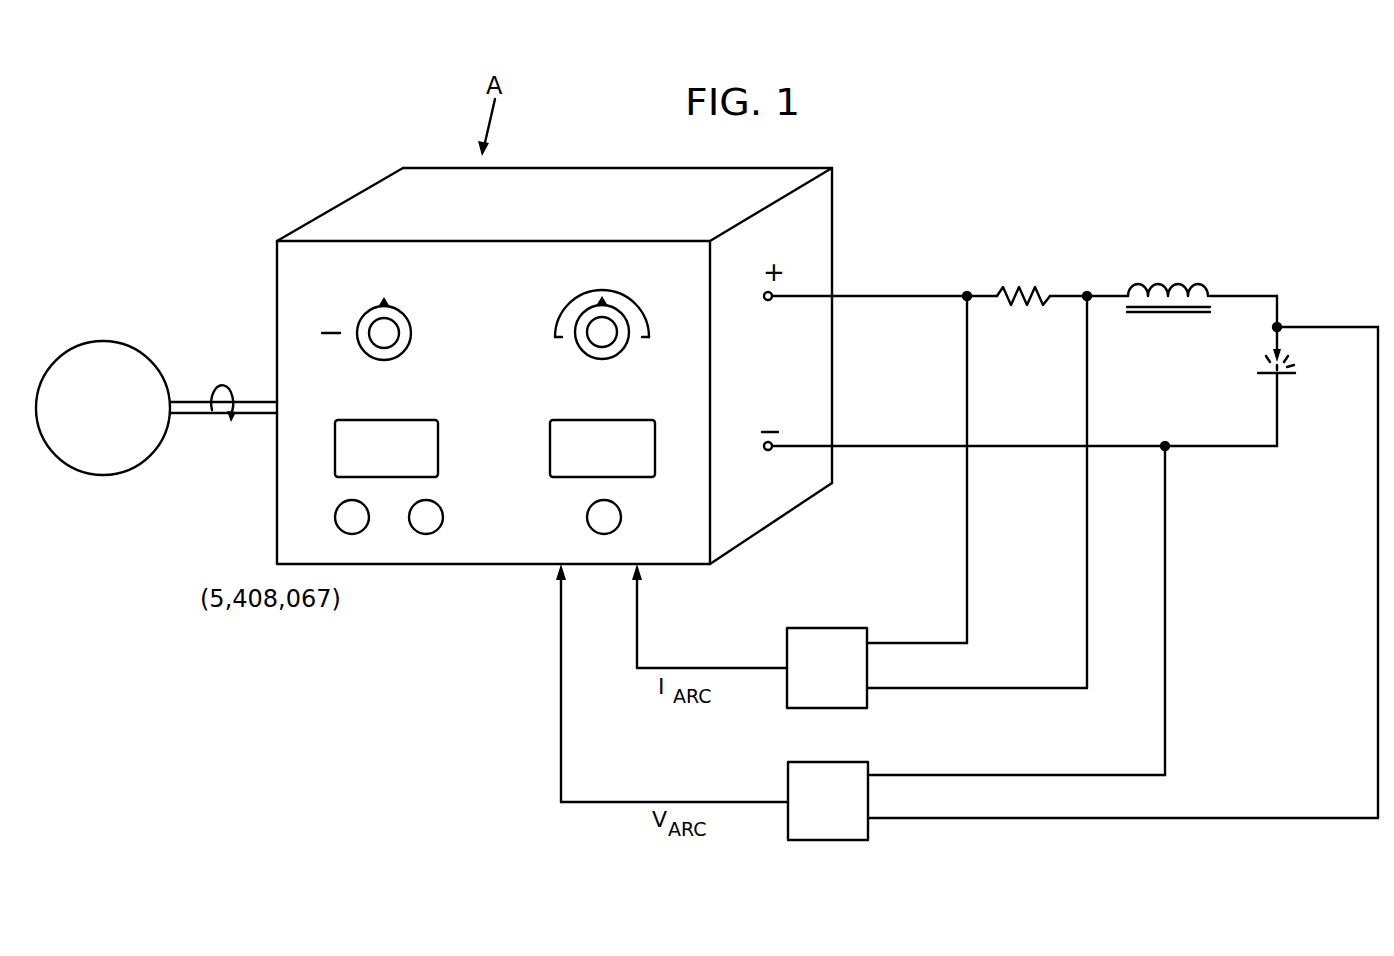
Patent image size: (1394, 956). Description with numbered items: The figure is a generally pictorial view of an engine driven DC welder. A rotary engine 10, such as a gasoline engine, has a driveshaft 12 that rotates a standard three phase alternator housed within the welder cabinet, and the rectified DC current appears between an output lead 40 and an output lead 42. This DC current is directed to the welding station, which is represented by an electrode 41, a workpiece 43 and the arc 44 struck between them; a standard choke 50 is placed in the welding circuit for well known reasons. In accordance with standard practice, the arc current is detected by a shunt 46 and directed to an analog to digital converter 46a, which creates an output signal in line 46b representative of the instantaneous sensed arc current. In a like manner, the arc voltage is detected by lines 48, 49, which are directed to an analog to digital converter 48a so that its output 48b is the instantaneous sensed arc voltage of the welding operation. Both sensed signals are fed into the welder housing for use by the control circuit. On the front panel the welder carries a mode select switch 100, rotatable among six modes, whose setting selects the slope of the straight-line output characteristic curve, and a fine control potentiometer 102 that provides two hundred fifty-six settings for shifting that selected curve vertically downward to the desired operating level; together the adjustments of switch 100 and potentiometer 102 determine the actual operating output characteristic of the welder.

The rotary engine 10 is at (120, 342).
The driveshaft 12 is at (198, 413).
The mode select switch 100 is at (400, 313).
The fine control potentiometer 102 is at (617, 308).
The output lead 40 is at (897, 296).
The output lead 42 is at (918, 446).
The shunt 46 is at (1017, 292).
The analog to digital converter 46a is at (842, 628).
The output signal line 46b is at (695, 667).
The voltage detection line 48 is at (1170, 818).
The analog to digital converter 48a is at (850, 840).
The converter output 48b is at (613, 802).
The voltage detection line 49 is at (1165, 613).
The choke 50 is at (1180, 282).
The electrode 41 is at (1273, 342).
The workpiece 43 is at (1285, 375).
The arc 44 is at (1263, 362).